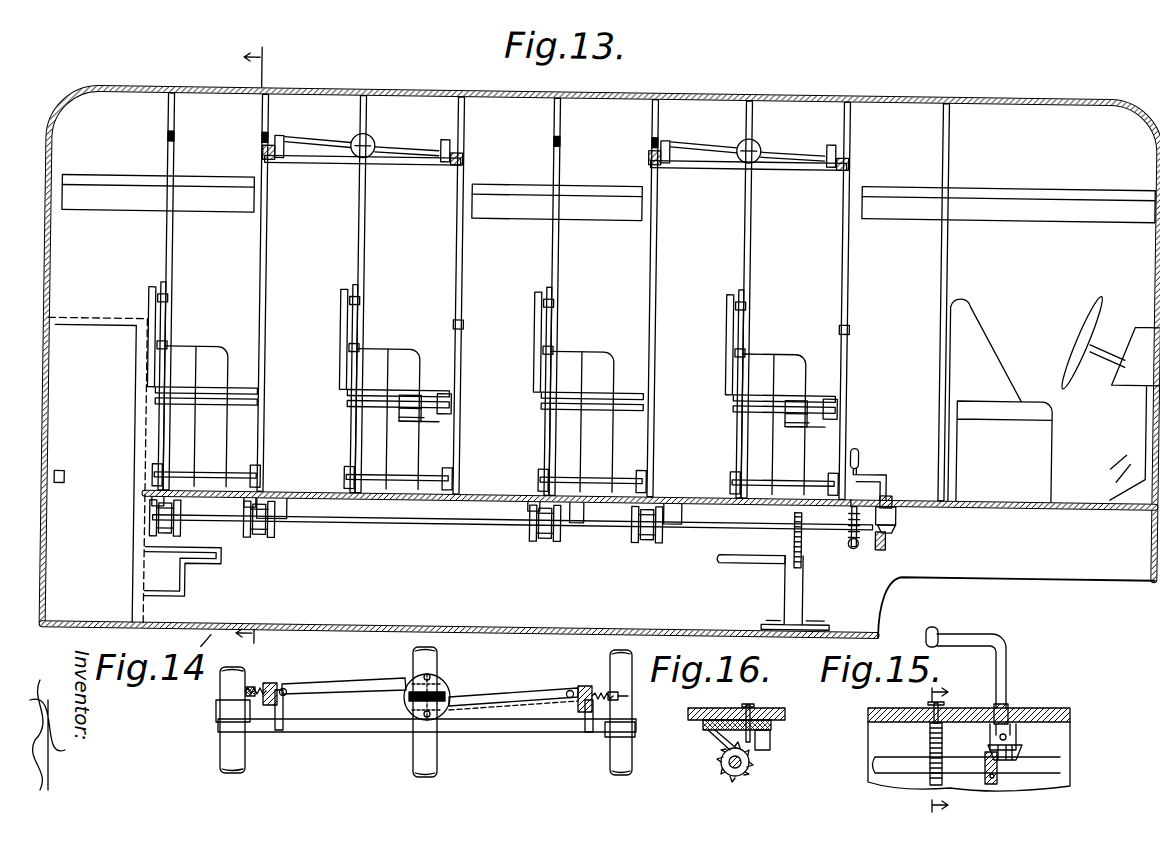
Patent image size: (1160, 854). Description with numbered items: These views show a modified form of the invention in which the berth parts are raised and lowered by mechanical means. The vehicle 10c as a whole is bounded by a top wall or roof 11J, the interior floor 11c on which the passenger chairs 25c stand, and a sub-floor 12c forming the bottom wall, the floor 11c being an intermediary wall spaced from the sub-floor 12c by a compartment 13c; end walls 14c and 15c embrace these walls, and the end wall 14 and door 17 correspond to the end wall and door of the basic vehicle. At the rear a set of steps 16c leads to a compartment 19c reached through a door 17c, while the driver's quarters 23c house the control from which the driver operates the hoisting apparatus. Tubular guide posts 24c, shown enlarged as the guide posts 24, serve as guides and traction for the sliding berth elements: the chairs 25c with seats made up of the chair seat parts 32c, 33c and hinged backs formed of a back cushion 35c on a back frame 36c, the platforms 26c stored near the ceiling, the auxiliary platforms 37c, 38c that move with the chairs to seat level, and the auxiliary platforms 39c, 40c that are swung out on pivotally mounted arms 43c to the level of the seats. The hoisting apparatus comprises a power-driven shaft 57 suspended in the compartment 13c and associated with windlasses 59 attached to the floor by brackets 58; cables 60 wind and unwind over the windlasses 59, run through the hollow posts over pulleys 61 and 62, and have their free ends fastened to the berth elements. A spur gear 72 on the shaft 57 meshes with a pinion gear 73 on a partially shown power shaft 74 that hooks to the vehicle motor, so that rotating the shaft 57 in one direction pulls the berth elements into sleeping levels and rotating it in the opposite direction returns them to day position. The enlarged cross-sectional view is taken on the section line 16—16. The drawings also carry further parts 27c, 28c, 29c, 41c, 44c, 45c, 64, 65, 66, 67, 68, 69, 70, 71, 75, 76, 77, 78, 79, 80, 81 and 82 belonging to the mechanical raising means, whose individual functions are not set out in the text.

In FIG. 13, the vehicle 10c is at (835, 91).
In FIG. 13, the top wall 11J is at (706, 92).
In FIG. 13, the floor 11c is at (480, 496).
In FIG. 13, the sub-floor 12c is at (555, 628).
In FIG. 13, the compartment 13c is at (905, 608).
In FIG. 13, the end wall 14c is at (1150, 252).
In FIG. 13, the end wall 15c is at (52, 241).
In FIG. 13, the steps 16c is at (190, 590).
In FIG. 13, the door 17c is at (70, 335).
In FIG. 13, the compartment 19c is at (125, 330).
In FIG. 13, the driver's quarters 23c is at (1058, 328).
In FIG. 13, the posts 24c is at (260, 120).
In FIG. 14, the posts 24c is at (612, 764).
In FIG. 14, the guide posts 24 is at (438, 768).
In FIG. 13, the passenger chairs 25c is at (204, 345).
In FIG. 13, the platforms 26c is at (352, 172).
In FIG. 14, the platforms 26c is at (358, 742).
In FIG. 13, the shelf 27c is at (95, 182).
In FIG. 14, the clamp block 28c is at (216, 712).
In FIG. 13, the clamp 29c is at (452, 325).
In FIG. 13, the chair seat 32c is at (255, 392).
In FIG. 13, the chair seat 33c is at (258, 407).
In FIG. 13, the back cushion 35c is at (165, 310).
In FIG. 13, the back frame 36c is at (148, 300).
In FIG. 13, the auxiliary platform 37c is at (250, 470).
In FIG. 13, the auxiliary platform 38c is at (258, 480).
In FIG. 13, the auxiliary platform 39c is at (440, 424).
In FIG. 13, the auxiliary platform 40c is at (400, 415).
In FIG. 13, the pin 41c is at (400, 420).
In FIG. 13, the pivotally mounted arms 43c is at (452, 404).
In FIG. 13, the bar section 44c is at (320, 168).
In FIG. 14, the bar section 44c is at (400, 733).
In FIG. 13, the bar section 45c is at (418, 168).
In FIG. 13, the shaft 57 is at (415, 528).
In FIG. 16, the shaft 57 is at (720, 762).
In FIG. 15, the shaft 57 is at (880, 768).
In FIG. 13, the brackets 58 is at (292, 512).
In FIG. 13, the windlasses 59 is at (185, 538).
In FIG. 13, the cables 60 is at (278, 540).
In FIG. 13, the pulleys 61 is at (154, 508).
In FIG. 13, the pulleys 62 is at (258, 142).
In FIG. 13, the bearing block 64 is at (890, 540).
In FIG. 15, the bearing block 64 is at (1000, 774).
In FIG. 13, the bevel gear 65 is at (900, 528).
In FIG. 15, the bevel gear 65 is at (1024, 755).
In FIG. 13, the bushing 66 is at (896, 502).
In FIG. 15, the bushing 66 is at (1010, 712).
In FIG. 13, the crank handle 67 is at (890, 472).
In FIG. 15, the crank handle 67 is at (1008, 656).
In FIG. 13, the bracket 68 is at (880, 503).
In FIG. 16, the bracket 68 is at (703, 725).
In FIG. 15, the bracket 68 is at (1018, 738).
In FIG. 13, the pinion 69 is at (860, 545).
In FIG. 16, the pinion 69 is at (750, 766).
In FIG. 15, the pinion 69 is at (945, 735).
In FIG. 13, the rack bar 70 is at (853, 515).
In FIG. 16, the rack bar 70 is at (772, 742).
In FIG. 15, the rack bar 70 is at (930, 738).
In FIG. 13, the screw 71 is at (852, 500).
In FIG. 16, the screw 71 is at (752, 705).
In FIG. 15, the screw 71 is at (940, 705).
In FIG. 13, the spur gear 72 is at (796, 518).
In FIG. 13, the pinion gear 73 is at (790, 552).
In FIG. 13, the power shaft 74 is at (756, 562).
In FIG. 13, the pedestal 75 is at (808, 596).
In FIG. 13, the disc 76 is at (366, 144).
In FIG. 14, the disc 76 is at (440, 680).
In FIG. 13, the lever arm 77 is at (332, 141).
In FIG. 14, the lever arm 77 is at (340, 683).
In FIG. 14, the pivot pin 78 is at (424, 676).
In FIG. 14, the spring 79 is at (290, 690).
In FIG. 14, the block 80 is at (278, 682).
In FIG. 13, the bolt 81 is at (280, 140).
In FIG. 14, the bolt 81 is at (280, 730).
In FIG. 14, the nut 82 is at (246, 690).
In FIG. 13, the door 17 is at (263, 344).
In FIG. 13, the end wall 14 is at (202, 643).
In FIG. 15, the section line 16 is at (923, 746).